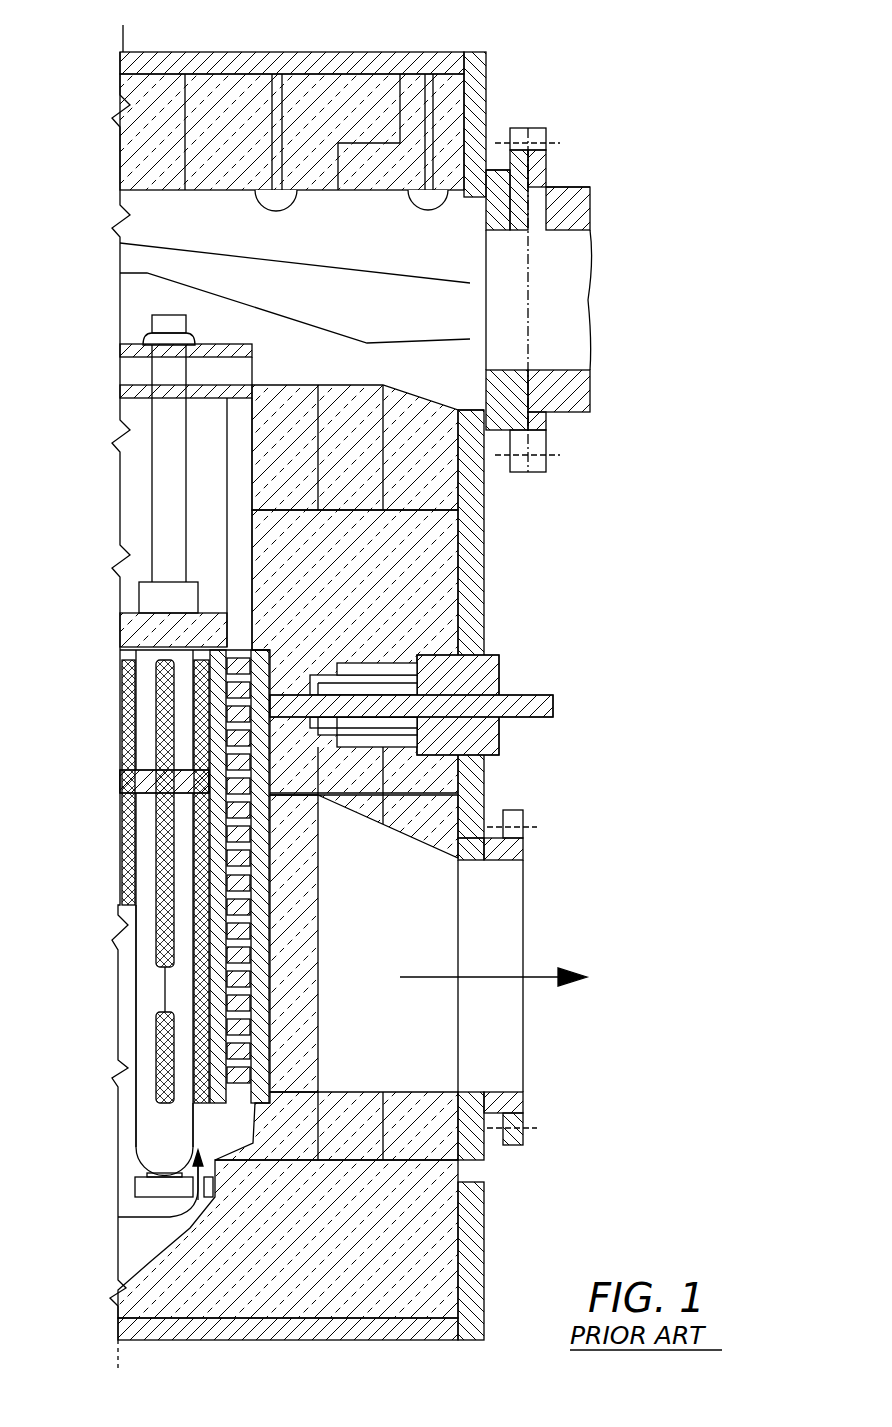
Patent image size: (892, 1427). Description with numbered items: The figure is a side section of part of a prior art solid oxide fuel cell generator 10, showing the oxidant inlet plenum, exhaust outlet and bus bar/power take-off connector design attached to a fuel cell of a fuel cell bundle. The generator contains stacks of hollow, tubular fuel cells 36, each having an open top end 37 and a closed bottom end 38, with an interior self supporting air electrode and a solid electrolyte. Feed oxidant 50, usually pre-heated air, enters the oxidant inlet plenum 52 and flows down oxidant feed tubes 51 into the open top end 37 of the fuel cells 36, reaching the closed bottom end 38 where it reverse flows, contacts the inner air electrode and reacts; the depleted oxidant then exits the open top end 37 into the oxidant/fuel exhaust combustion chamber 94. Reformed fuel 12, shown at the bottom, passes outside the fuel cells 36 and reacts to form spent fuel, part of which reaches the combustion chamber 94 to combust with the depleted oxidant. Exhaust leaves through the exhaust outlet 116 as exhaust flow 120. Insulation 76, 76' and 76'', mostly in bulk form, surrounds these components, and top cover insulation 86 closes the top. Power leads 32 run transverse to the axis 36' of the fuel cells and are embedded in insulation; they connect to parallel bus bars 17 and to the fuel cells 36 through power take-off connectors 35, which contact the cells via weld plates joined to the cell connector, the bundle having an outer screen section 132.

The solid oxide fuel cell generator 10 is at (567, 536).
The reformed fuel 12 is at (152, 1223).
The parallel bus bars 17 is at (265, 902).
The power leads 32 is at (533, 693).
The power take-off connectors 35 is at (245, 933).
The fuel cells 36 is at (148, 876).
The axis of the fuel cells 36' is at (119, 1035).
The open top end 37 is at (197, 597).
The closed bottom end 38 is at (145, 1133).
The feed oxidant 50 is at (337, 333).
The oxidant feed tubes 51 is at (178, 480).
The oxidant inlet plenum 52 is at (444, 257).
The insulation 76 is at (392, 738).
The insulation 76' is at (351, 204).
The insulation 76'' is at (288, 836).
The top cover insulation 86 is at (320, 87).
The oxidant/fuel exhaust combustion chamber 94 is at (120, 490).
The exhaust outlet 116 is at (512, 941).
The exhaust flow 120 is at (440, 977).
The screen section 132 is at (200, 1107).